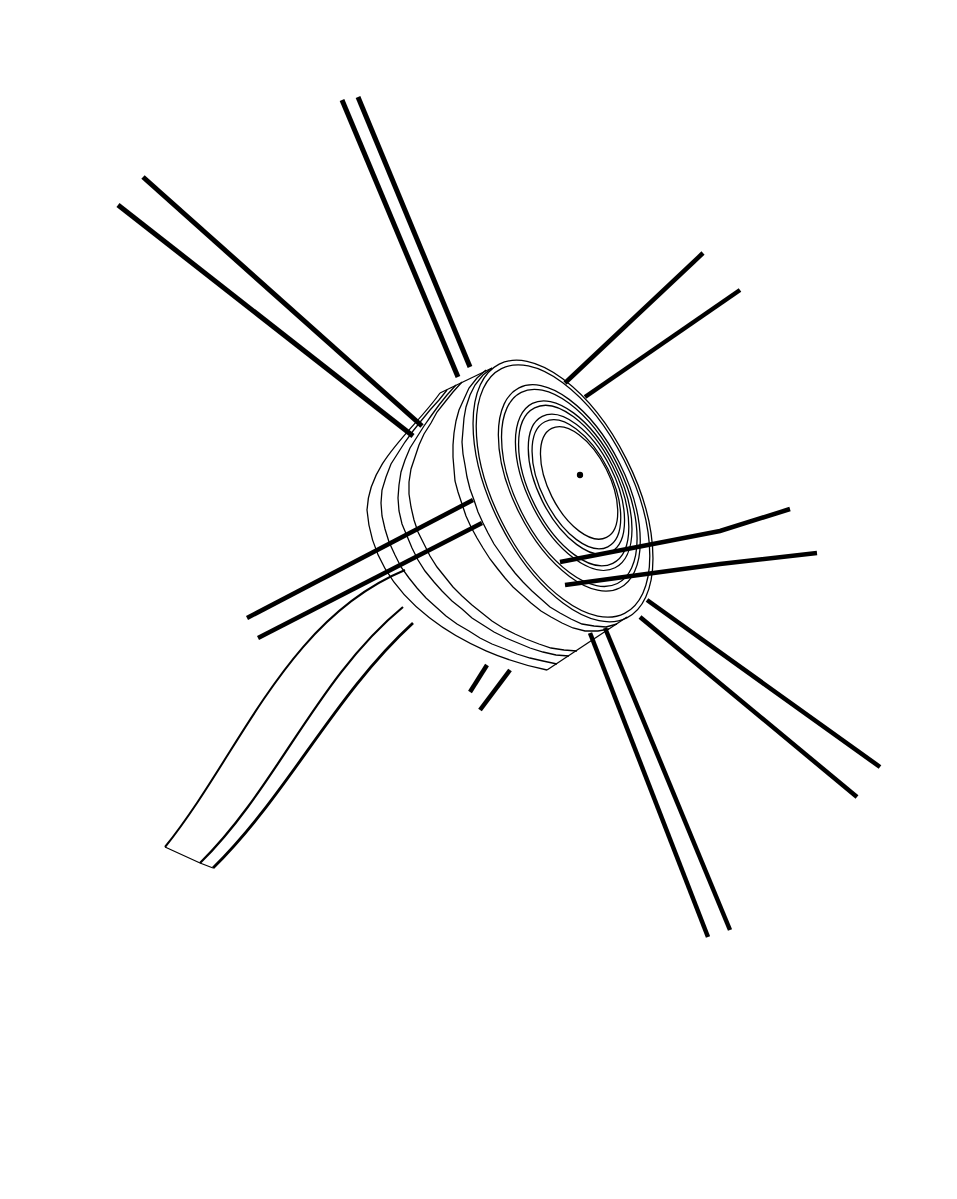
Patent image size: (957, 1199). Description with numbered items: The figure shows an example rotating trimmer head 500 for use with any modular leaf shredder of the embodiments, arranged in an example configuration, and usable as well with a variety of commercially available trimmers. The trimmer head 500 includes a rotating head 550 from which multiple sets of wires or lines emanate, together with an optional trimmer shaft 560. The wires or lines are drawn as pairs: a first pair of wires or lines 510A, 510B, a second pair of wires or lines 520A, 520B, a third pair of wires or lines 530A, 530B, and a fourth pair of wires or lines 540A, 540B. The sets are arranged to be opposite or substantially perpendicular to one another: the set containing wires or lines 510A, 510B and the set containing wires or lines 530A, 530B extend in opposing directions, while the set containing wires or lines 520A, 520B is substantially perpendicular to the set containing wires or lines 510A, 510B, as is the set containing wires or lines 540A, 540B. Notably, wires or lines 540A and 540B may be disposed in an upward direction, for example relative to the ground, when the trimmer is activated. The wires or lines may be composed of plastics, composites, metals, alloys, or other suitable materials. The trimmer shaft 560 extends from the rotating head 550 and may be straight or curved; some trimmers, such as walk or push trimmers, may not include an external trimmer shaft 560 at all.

The trimmer head 500 is at (512, 1010).
The wire or line 510A is at (700, 855).
The wire or line 510B is at (837, 730).
The wire or line 520A is at (798, 552).
The wire or line 520B is at (703, 250).
The wire or line 530A is at (383, 142).
The wire or line 530B is at (243, 260).
The wire or line 540A is at (247, 620).
The wire or line 540B is at (475, 712).
The rotating head 550 is at (638, 467).
The trimmer shaft 560 is at (250, 797).